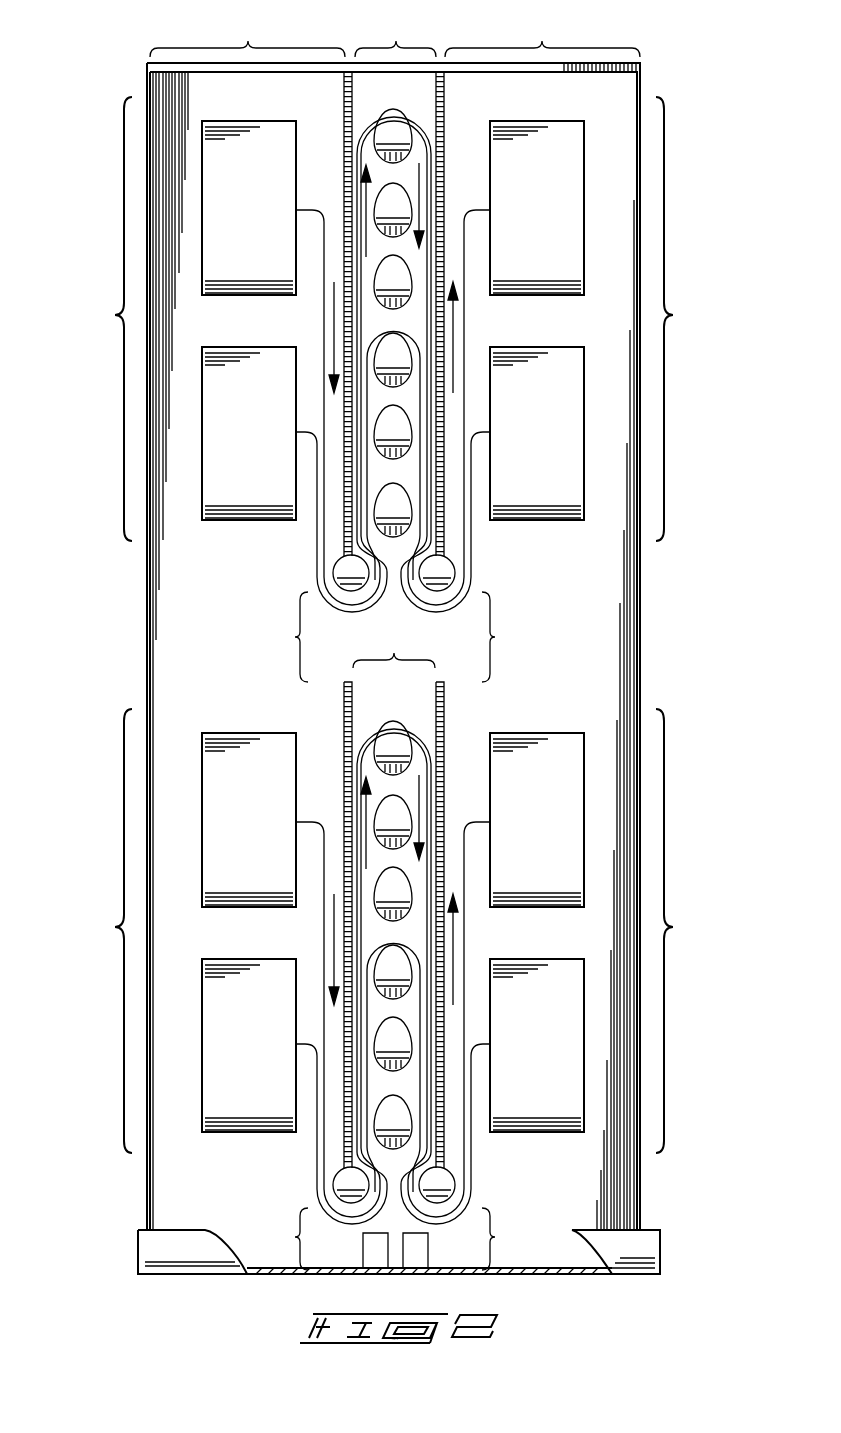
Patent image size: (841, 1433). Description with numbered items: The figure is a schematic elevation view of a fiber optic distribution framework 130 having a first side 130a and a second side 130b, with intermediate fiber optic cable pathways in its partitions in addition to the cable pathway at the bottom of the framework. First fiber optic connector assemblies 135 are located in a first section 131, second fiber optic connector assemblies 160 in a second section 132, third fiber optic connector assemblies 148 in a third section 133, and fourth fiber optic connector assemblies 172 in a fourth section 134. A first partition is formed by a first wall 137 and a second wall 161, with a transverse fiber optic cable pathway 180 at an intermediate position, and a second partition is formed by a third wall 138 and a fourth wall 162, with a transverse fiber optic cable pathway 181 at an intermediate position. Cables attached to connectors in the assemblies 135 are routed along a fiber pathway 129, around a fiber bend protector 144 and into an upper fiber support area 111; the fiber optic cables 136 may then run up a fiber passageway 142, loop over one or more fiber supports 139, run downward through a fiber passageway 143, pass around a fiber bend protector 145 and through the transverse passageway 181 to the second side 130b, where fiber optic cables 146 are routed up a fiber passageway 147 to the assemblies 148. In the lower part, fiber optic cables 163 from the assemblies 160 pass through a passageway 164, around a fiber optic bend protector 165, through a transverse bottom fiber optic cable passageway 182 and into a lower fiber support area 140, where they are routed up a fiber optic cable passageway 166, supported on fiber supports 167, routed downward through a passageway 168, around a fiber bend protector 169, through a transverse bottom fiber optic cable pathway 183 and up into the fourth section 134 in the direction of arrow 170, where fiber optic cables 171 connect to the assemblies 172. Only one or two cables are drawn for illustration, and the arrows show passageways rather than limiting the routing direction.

The distribution framework 130 is at (120, 620).
The first side 130a is at (278, 34).
The second side 130b is at (573, 34).
The fiber support area 111 is at (395, 32).
The fiber support area 140 is at (394, 645).
The first section 131 is at (96, 319).
The third section 133 is at (692, 319).
The second section 132 is at (96, 931).
The fourth section 134 is at (692, 931).
The first fiber optic connector assemblies 135 is at (223, 190).
The third fiber optic connector assemblies 148 is at (518, 190).
The second fiber optic connector assemblies 160 is at (249, 932).
The fourth fiber optic connector assemblies 172 is at (537, 932).
The fiber optic cables 136 is at (317, 540).
The fiber optic cables 146 is at (471, 540).
The fiber optic cables 163 is at (269, 997).
The fiber optic cables 171 is at (518, 997).
The first wall 137 is at (344, 106).
The third wall 138 is at (444, 106).
The second wall 161 is at (296, 925).
The fourth wall 162 is at (491, 925).
The fiber supports 139 is at (390, 132).
The fiber supports 167 is at (389, 939).
The fiber passageway 142 is at (366, 193).
The fiber passageway 143 is at (419, 193).
The fiber optic cable passageway 166 is at (335, 812).
The passageway 168 is at (452, 808).
The fiber pathway 129 is at (334, 320).
The fiber passageway 147 is at (453, 320).
The passageway 164 is at (314, 976).
The arrow 170 is at (473, 976).
The fiber bend protector 144 is at (333, 574).
The fiber bend protector 145 is at (455, 574).
The fiber optic bend protector 165 is at (296, 1185).
The fiber bend protector 169 is at (491, 1185).
The transverse fiber optic cable pathway 180 is at (271, 637).
The transverse fiber optic cable pathway 181 is at (518, 637).
The transverse bottom fiber optic cable passageway 182 is at (273, 1239).
The transverse bottom fiber optic cable pathway 183 is at (513, 1239).